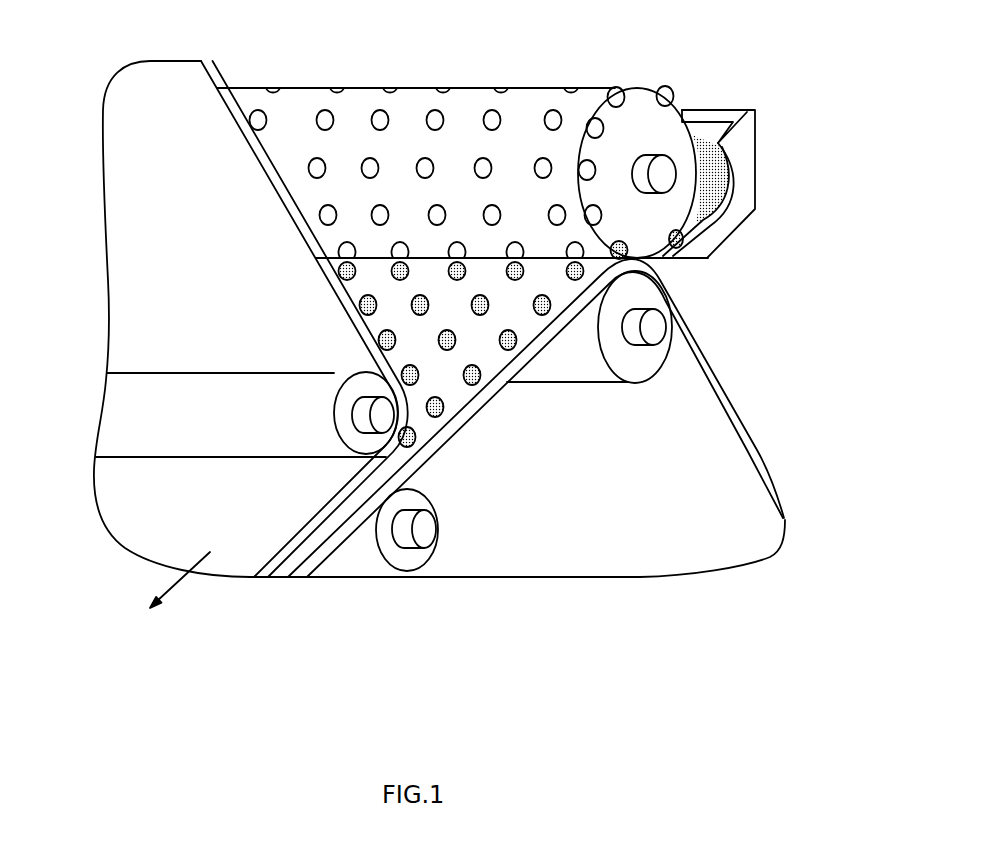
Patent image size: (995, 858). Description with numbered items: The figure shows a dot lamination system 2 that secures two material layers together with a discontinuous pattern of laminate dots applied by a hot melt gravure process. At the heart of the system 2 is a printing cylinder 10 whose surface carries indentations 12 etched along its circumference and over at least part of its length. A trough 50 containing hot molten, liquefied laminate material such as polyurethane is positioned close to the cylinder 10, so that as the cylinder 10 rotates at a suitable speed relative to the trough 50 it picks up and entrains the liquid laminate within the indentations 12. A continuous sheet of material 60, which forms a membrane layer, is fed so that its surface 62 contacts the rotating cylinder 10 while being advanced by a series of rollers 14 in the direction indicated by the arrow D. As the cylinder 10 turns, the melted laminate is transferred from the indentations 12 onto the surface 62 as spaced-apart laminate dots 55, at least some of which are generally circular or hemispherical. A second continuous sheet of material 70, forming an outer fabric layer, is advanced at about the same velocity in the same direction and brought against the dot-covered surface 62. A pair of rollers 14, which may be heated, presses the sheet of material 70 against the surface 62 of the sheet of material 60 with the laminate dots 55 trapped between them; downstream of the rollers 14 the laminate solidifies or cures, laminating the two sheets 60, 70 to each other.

The system 2 is at (812, 94).
The printing cylinder 10 is at (657, 244).
The indentations 12 is at (543, 165).
The rollers 14 is at (350, 435).
The trough 50 is at (742, 197).
The laminate dots 55 is at (537, 303).
The sheet of material 60 is at (493, 390).
The surface 62 is at (498, 360).
The sheet of material 70 is at (173, 257).